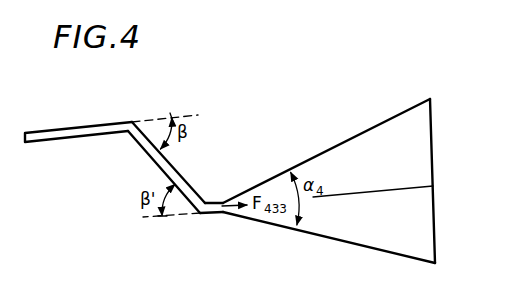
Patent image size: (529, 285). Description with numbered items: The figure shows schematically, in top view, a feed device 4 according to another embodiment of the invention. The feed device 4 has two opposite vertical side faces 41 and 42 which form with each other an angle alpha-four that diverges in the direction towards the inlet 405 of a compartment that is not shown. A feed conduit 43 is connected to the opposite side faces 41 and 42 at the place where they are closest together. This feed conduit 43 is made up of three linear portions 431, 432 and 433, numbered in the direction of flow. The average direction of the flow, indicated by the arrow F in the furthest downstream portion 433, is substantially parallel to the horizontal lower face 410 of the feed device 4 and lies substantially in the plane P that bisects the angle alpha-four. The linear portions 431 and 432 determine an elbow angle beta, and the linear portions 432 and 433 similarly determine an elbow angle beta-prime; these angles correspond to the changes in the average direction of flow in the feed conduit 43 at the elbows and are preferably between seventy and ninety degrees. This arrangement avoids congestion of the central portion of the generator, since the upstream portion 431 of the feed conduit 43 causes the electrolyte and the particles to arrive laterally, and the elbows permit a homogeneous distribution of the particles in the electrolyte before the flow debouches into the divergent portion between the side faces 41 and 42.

The feed device 4 is at (365, 173).
The vertical side face 41 is at (332, 147).
The vertical side face 42 is at (345, 241).
The feed conduit 43 is at (141, 177).
The linear portion 431 is at (97, 136).
The linear portion 432 is at (174, 168).
The linear portion 433 is at (217, 213).
The inlet 405 is at (433, 142).
The horizontal lower face 410 is at (423, 215).